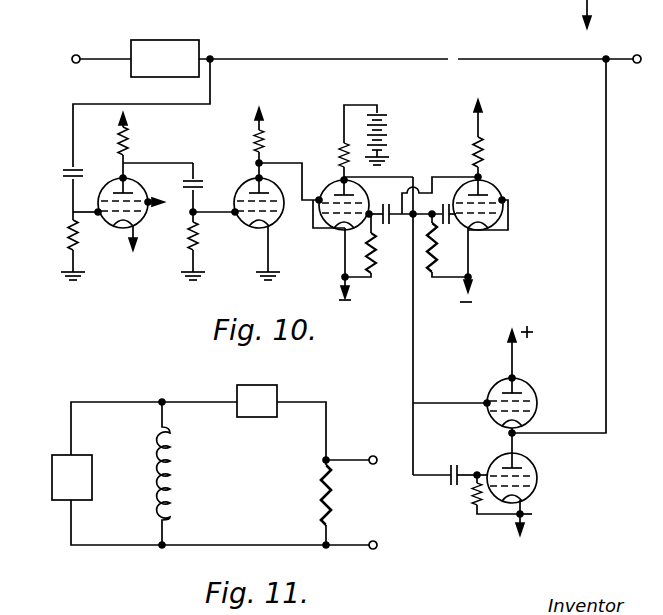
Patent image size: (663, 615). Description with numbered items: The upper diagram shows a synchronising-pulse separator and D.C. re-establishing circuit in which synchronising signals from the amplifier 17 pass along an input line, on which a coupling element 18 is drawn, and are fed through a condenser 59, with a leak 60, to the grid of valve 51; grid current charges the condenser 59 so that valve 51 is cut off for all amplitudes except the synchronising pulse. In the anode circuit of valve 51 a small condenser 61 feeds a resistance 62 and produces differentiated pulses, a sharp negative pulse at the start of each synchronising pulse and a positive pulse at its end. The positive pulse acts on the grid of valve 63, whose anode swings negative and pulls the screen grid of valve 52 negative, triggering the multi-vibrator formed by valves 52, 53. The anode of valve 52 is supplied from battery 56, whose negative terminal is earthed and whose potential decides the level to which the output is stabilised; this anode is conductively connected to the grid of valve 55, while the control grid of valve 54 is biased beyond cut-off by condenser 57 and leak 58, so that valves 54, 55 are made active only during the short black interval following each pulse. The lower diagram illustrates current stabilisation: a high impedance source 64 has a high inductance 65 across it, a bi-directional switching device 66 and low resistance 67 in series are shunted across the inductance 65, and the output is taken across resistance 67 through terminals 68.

In FIG. 10, the amplifier 17 is at (183, 31).
In FIG. 10, the coupling capacitor 18 is at (447, 52).
In FIG. 10, the valve 51 is at (140, 215).
In FIG. 10, the valve 52 is at (330, 189).
In FIG. 10, the valve 53 is at (492, 191).
In FIG. 10, the valve 54 is at (537, 484).
In FIG. 10, the valve 55 is at (532, 393).
In FIG. 10, the battery 56 is at (386, 128).
In FIG. 10, the condenser 57 is at (450, 481).
In FIG. 10, the leak 58 is at (476, 508).
In FIG. 10, the condenser 59 is at (66, 169).
In FIG. 10, the leak 60 is at (69, 235).
In FIG. 10, the condenser 61 is at (200, 184).
In FIG. 10, the resistance 62 is at (198, 238).
In FIG. 10, the valve 63 is at (275, 192).
In FIG. 11, the high impedance source 64 is at (52, 481).
In FIG. 11, the high inductance 65 is at (157, 478).
In FIG. 11, the bi-directional switching device 66 is at (261, 393).
In FIG. 11, the low resistance 67 is at (322, 493).
In FIG. 11, the terminals 68 is at (376, 465).